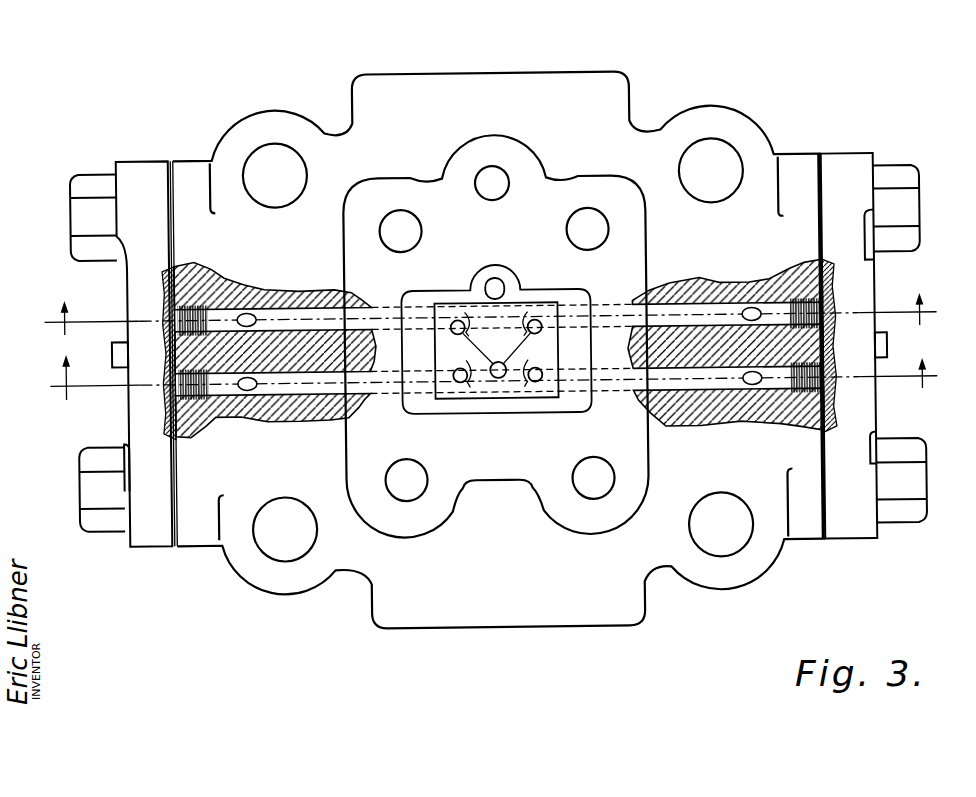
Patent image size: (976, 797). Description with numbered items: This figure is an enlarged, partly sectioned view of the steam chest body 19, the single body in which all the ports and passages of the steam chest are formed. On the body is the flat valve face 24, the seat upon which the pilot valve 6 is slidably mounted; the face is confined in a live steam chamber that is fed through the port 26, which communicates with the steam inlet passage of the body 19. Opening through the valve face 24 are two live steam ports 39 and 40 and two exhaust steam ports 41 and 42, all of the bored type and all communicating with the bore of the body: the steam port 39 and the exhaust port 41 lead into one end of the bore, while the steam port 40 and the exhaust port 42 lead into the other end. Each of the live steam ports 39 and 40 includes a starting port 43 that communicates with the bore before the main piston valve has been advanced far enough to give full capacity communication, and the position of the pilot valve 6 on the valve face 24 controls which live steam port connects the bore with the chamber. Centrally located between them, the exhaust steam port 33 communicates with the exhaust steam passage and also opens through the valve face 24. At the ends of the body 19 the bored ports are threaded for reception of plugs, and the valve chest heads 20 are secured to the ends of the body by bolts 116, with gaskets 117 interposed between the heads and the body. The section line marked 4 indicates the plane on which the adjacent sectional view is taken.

The steam chest body 19 is at (597, 83).
The valve chest heads 20 is at (136, 157).
The valve face 24 is at (505, 310).
The port 26 is at (494, 279).
The exhaust steam port 33 is at (498, 362).
The live steam port 39 is at (458, 320).
The live steam port 40 is at (540, 320).
The exhaust steam port 41 is at (455, 375).
The exhaust steam port 42 is at (537, 372).
The starting port 43 is at (197, 289).
The bolts 116 is at (85, 208).
The gaskets 117 is at (176, 234).
The section line 4- 4 is at (488, 348).
The pilot valve 6 is at (487, 346).